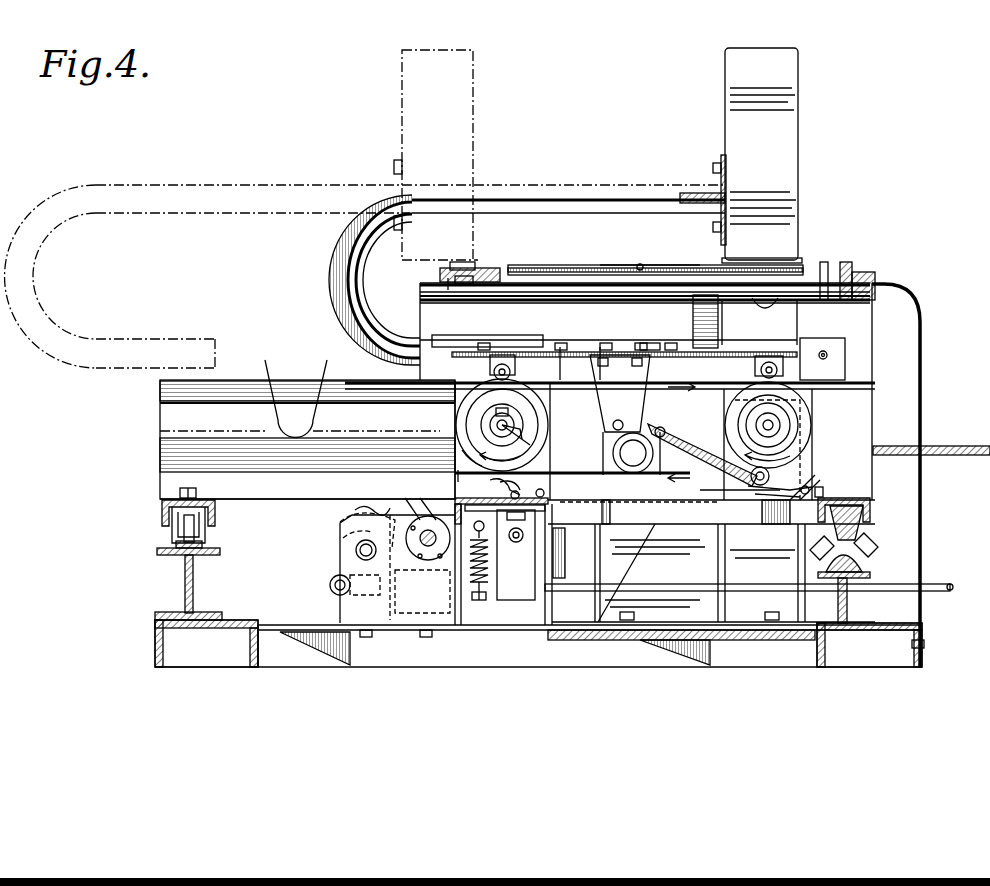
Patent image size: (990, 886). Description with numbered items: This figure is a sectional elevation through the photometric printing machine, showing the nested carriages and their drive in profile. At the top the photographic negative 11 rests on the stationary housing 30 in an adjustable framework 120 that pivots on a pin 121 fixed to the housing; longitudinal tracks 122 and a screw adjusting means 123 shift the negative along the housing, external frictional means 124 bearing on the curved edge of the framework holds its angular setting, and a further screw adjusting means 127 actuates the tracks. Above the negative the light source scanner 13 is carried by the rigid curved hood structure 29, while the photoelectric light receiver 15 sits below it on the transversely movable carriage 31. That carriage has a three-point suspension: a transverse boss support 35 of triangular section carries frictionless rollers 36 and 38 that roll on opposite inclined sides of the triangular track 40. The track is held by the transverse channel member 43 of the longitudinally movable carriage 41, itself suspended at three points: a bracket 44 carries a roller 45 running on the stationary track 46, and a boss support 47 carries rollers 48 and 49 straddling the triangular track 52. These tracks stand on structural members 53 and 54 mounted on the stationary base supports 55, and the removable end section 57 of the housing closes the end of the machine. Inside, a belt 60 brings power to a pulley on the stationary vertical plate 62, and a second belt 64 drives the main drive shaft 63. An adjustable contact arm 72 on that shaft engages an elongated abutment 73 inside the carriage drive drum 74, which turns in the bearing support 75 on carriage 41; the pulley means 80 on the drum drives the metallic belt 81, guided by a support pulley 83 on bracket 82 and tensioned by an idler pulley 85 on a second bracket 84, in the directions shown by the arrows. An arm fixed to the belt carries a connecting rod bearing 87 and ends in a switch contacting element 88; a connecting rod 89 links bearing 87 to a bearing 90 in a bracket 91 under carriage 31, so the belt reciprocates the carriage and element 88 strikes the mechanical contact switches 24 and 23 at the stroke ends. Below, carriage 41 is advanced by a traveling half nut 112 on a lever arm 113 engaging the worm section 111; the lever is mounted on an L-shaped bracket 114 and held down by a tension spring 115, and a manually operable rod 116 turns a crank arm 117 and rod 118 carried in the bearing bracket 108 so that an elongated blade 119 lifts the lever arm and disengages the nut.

The photographic negative 11 is at (551, 265).
The light source scanner 13 is at (790, 125).
The photoelectric light receiver 15 is at (795, 332).
The mechanical contact switch 23 is at (545, 490).
The mechanical contact switch 24 is at (812, 468).
The curved hood structure 29 is at (546, 200).
The stationary housing 30 is at (922, 345).
The movable carriage 31 is at (648, 343).
The transverse boss support 35 is at (592, 322).
The roller 36 is at (770, 356).
The roller 38 is at (500, 355).
The track 40 is at (295, 365).
The movable carriage 41 is at (154, 518).
The transverse channel member 43 is at (162, 430).
The bracket 44 is at (175, 532).
The roller 45 is at (195, 528).
The stationary track 46 is at (205, 542).
The boss support 47 is at (860, 532).
The roller 48 is at (815, 538).
The roller 49 is at (872, 550).
The track 52 is at (852, 570).
The structural member 53 is at (186, 585).
The structural member 54 is at (840, 598).
The stationary base support 55 is at (157, 647).
The removable end section 57 is at (845, 357).
The belt 60 is at (945, 446).
The stationary vertical plate 62 is at (665, 564).
The main drive shaft 63 is at (465, 454).
The second belt 64 is at (628, 524).
The adjustable contact arm 72 is at (512, 412).
The elongated abutment 73 is at (522, 430).
The carriage drive drum 74 is at (458, 389).
The bearing support 75 is at (532, 446).
The pulley means 80 is at (458, 475).
The metallic belt 81 is at (555, 473).
The bracket 82 is at (795, 448).
The support pulley 83 is at (812, 415).
The second bracket 84 is at (662, 434).
The idler pulley 85 is at (700, 495).
The connecting rod bearing 87 is at (750, 476).
The switch contacting element 88 is at (748, 494).
The connecting rod 89 is at (685, 444).
The bearing 90 is at (624, 425).
The bracket 91 is at (625, 415).
The bearing bracket 108 is at (342, 609).
The worm section 111 is at (430, 560).
The traveling half nut 112 is at (420, 498).
The lever arm 113 is at (345, 533).
The L-shaped bracket 114 is at (535, 559).
The tension spring 115 is at (482, 590).
The manually operable rod 116 is at (938, 591).
The crank arm 117 is at (332, 578).
The rod 118 is at (356, 547).
The elongated blade 119 is at (355, 513).
The adjustable framework 120 is at (824, 262).
The pin 121 is at (462, 276).
The longitudinal tracks 122 is at (485, 282).
The screw adjusting means 123 is at (641, 264).
The external frictional means 124 is at (875, 278).
The screw adjusting means 127 is at (846, 262).